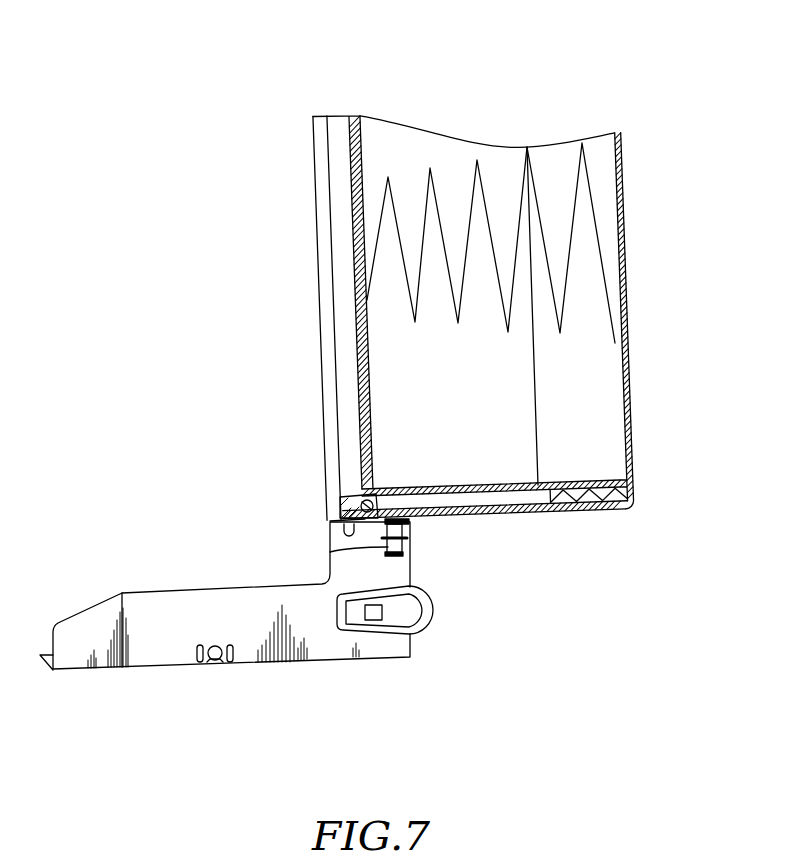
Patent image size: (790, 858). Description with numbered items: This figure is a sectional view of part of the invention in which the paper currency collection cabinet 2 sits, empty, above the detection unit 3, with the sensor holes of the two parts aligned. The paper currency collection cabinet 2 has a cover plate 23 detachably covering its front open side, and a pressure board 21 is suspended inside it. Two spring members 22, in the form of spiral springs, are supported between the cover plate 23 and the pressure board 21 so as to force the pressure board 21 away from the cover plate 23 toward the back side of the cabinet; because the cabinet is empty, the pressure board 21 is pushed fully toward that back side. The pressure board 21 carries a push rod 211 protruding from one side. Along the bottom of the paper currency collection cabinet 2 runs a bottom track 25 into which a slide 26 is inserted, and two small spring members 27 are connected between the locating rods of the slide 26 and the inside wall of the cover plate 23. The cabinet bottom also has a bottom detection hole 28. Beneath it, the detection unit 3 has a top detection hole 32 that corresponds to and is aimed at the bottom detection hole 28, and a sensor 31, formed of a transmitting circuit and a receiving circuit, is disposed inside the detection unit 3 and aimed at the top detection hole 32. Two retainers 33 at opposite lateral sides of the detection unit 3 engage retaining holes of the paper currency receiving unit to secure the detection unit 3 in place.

The paper currency collection cabinet 2 is at (538, 112).
The pressure board 21 is at (352, 205).
The push rod 211 is at (350, 497).
The spring members 22 is at (600, 243).
The cover plate 23 is at (632, 418).
The bottom track 25 is at (347, 507).
The slide 26 is at (518, 516).
The small spring members 27 is at (600, 516).
The bottom detection hole 28 is at (345, 521).
The detection unit 3 is at (147, 598).
The sensor 31 is at (390, 552).
The top detection hole 32 is at (407, 527).
The retainers 33 is at (423, 615).